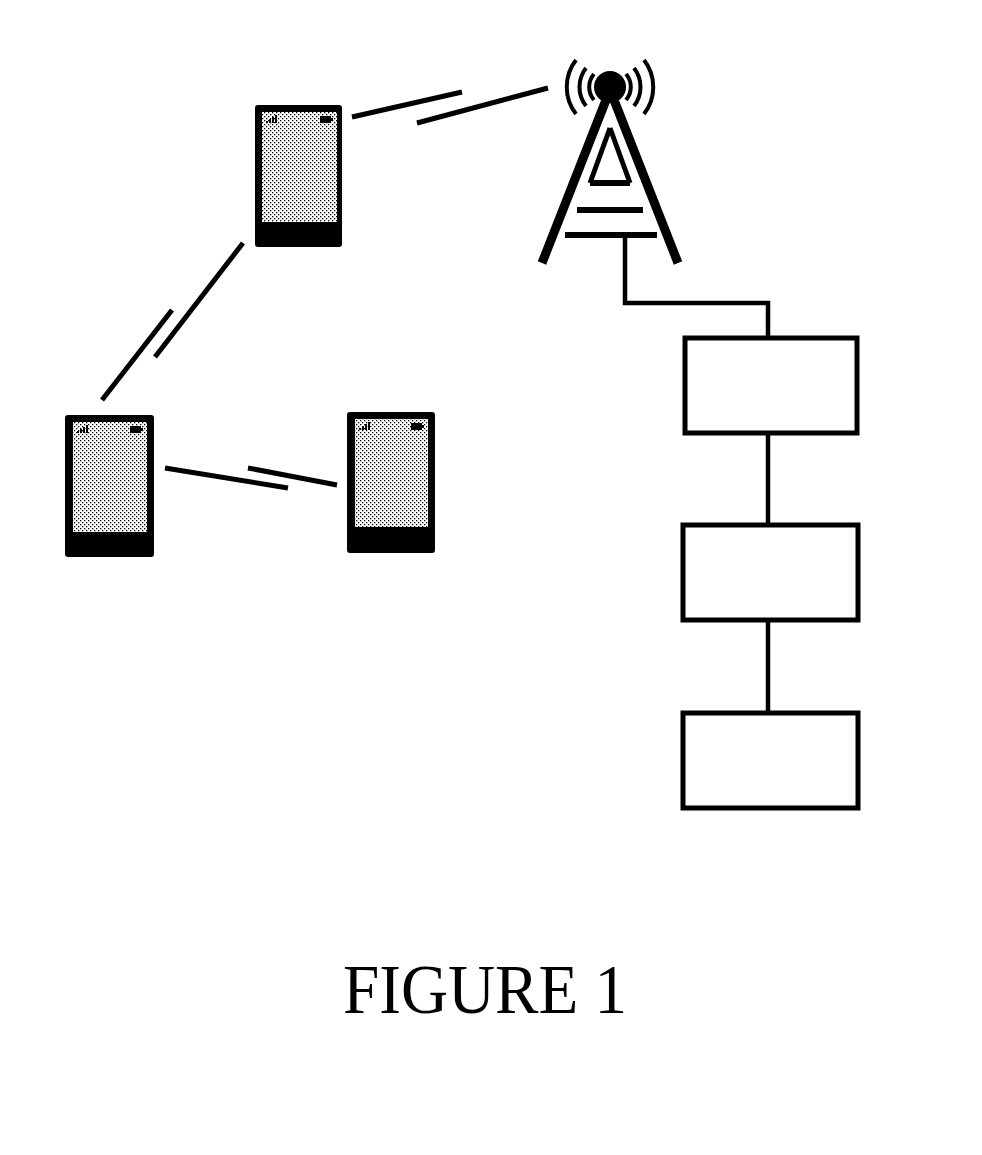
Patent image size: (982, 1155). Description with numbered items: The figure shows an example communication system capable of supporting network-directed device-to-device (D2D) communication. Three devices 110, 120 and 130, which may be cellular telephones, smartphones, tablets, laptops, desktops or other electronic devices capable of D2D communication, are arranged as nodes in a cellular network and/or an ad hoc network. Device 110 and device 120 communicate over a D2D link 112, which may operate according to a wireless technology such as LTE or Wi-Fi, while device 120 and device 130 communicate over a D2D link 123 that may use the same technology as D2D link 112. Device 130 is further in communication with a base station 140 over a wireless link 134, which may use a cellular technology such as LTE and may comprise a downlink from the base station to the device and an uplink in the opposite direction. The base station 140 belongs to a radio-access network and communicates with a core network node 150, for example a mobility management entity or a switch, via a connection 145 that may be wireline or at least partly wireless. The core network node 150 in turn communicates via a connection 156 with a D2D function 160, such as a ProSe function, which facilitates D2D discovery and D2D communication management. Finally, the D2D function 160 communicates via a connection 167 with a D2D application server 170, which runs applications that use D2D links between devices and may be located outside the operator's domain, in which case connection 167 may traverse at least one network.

The device 110 is at (380, 553).
The D2D link 112 is at (285, 490).
The device 120 is at (103, 557).
The D2D link 123 is at (157, 333).
The device 130 is at (255, 163).
The wireless link 134 is at (460, 93).
The base station 140 is at (648, 200).
The connection 145 is at (733, 302).
The core network node 150 is at (771, 385).
The connection 156 is at (767, 500).
The D2D function 160 is at (770, 572).
The connection 167 is at (767, 687).
The D2D application server 170 is at (770, 760).